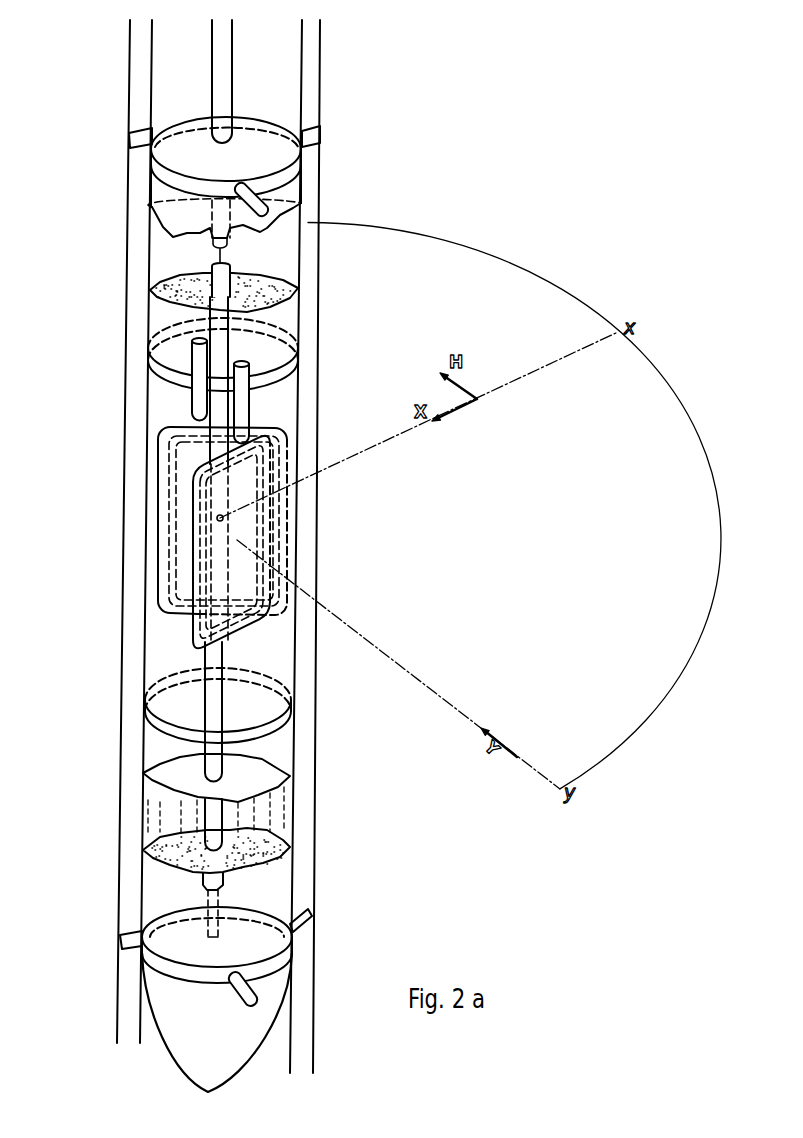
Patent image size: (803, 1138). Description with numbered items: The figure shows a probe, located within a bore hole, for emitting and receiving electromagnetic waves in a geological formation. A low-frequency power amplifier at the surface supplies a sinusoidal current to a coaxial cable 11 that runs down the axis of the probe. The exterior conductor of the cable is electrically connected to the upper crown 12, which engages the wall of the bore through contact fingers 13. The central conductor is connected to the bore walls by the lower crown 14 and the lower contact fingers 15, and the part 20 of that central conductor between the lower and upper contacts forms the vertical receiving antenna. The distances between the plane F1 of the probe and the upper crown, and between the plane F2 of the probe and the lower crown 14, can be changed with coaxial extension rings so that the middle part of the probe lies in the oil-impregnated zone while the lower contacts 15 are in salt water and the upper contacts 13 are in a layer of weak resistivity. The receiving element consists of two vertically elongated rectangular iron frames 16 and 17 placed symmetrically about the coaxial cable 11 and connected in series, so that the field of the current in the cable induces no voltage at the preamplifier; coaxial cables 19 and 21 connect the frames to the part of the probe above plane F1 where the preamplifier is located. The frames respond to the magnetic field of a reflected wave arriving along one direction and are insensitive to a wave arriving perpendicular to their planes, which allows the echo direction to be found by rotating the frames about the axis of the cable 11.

The coaxial cable 11 is at (222, 78).
The upper crown 12 is at (224, 189).
The contact fingers 13 is at (141, 136).
The lower crown 14 is at (217, 999).
The lower contact fingers 15 is at (122, 938).
The rectangular iron frame 16 is at (270, 535).
The rectangular iron frame 17 is at (167, 537).
The coaxial cable 19 is at (194, 414).
The part of central conductor 20 is at (217, 656).
The coaxial cable 21 is at (241, 413).
The plane of the probe F1 is at (232, 354).
The plane of the probe F2 is at (228, 705).